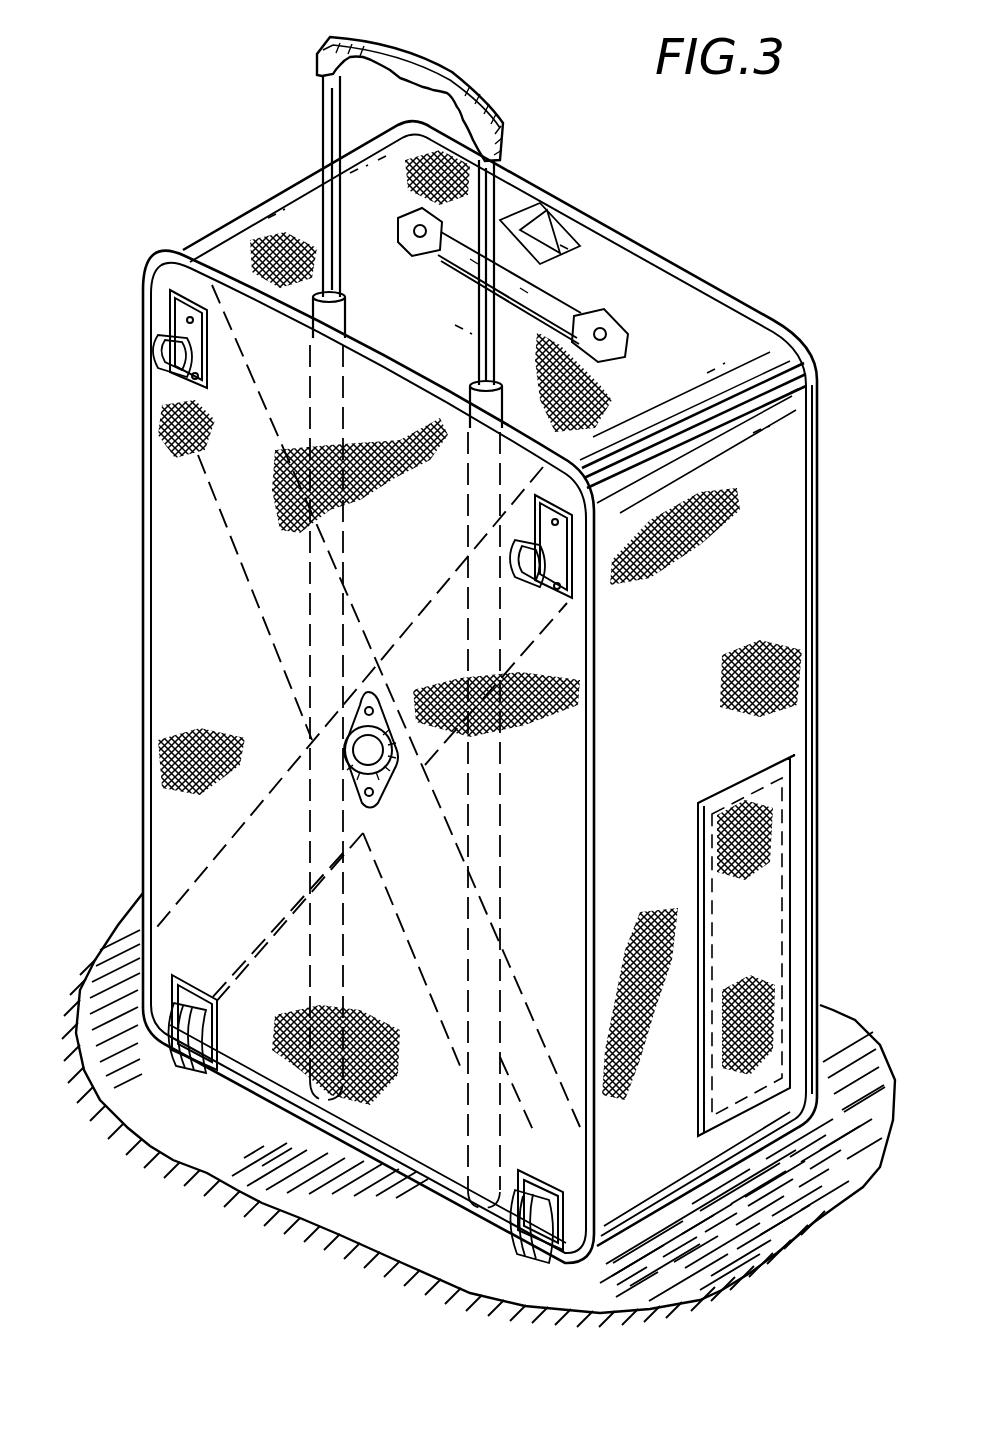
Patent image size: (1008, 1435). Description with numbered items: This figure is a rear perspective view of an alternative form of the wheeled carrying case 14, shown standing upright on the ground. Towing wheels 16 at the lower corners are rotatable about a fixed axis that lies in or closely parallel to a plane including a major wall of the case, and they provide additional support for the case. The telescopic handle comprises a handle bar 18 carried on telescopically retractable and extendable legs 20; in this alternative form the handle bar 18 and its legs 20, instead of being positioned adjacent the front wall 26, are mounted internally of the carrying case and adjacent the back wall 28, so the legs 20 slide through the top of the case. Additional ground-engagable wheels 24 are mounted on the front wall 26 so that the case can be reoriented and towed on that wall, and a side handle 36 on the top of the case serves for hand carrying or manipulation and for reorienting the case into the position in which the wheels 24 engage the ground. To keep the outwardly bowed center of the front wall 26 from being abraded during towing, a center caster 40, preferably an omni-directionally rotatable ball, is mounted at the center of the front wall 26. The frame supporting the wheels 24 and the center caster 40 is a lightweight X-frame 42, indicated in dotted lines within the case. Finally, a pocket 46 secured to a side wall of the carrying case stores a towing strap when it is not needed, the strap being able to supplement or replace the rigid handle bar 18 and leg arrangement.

The carrying case 14 is at (770, 613).
The towing wheels 16 is at (207, 1070).
The handle bar 18 is at (440, 66).
The telescopic legs 20 is at (328, 128).
The ground-engagable wheel 24 is at (160, 346).
The front wall 26 is at (832, 539).
The back wall 28 is at (170, 822).
The side handle 36 is at (587, 293).
The center caster 40 is at (343, 748).
The X-frame 42 is at (368, 713).
The pocket 46 is at (783, 917).